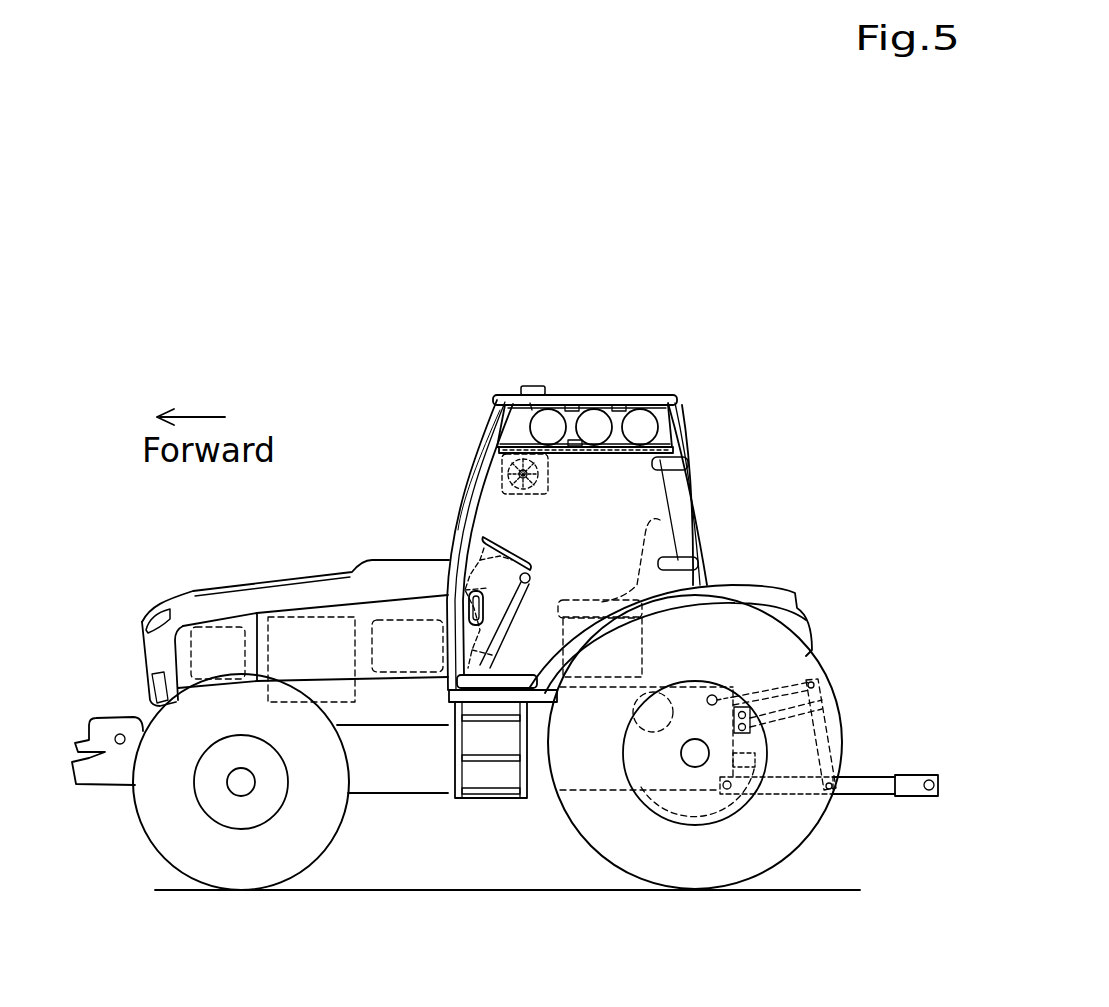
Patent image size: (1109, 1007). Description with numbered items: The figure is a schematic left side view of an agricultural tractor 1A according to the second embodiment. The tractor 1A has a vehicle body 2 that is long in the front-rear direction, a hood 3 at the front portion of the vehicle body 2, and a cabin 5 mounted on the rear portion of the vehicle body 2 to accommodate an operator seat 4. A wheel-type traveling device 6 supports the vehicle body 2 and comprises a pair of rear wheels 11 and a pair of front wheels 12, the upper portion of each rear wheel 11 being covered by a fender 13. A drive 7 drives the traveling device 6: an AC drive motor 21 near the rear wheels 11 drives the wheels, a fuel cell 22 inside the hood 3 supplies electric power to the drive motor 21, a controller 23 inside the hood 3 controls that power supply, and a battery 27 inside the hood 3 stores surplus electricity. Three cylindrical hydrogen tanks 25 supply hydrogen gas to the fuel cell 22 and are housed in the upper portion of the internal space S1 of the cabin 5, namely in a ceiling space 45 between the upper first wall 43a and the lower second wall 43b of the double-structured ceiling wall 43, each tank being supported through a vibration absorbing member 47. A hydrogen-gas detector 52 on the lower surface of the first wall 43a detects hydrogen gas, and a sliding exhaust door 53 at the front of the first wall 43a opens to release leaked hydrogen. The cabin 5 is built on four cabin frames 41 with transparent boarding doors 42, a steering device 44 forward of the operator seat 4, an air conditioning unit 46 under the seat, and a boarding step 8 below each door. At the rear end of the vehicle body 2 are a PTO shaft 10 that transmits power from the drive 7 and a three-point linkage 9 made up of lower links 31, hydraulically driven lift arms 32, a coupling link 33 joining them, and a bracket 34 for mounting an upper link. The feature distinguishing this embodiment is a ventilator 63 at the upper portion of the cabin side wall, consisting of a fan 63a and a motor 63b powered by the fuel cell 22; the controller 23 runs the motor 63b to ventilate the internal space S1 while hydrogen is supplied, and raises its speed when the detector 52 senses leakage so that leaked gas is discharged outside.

The agricultural tractor 1A is at (320, 393).
The vehicle body 2 is at (407, 768).
The hood 3 is at (223, 583).
The operator seat 4 is at (609, 568).
The cabin 5 is at (561, 488).
The traveling device 6 is at (482, 742).
The drive 7 is at (505, 544).
The boarding step 8 is at (468, 800).
The three-point linkage 9 is at (828, 714).
The PTO shaft 10 is at (755, 760).
The rear wheels 11 is at (788, 838).
The front wheels 12 is at (180, 838).
The fender 13 is at (777, 598).
The drive motor 21 is at (628, 742).
The fuel cell 22 is at (318, 618).
The controller 23 is at (390, 622).
The hydrogen tanks 25 is at (548, 410).
The battery 27 is at (222, 628).
The lower links 31 is at (829, 764).
The lift arms 32 is at (790, 680).
The coupling link 33 is at (843, 732).
The bracket 34 is at (818, 695).
The cabin frames 41 is at (483, 487).
The boarding doors 42 is at (645, 508).
The ceiling wall 43 is at (655, 396).
The first wall 43a is at (657, 395).
The second wall 43b is at (660, 447).
The steering device 44 is at (522, 565).
The ceiling space 45 is at (500, 415).
The air conditioning unit 46 is at (612, 662).
The vibration absorbing member 47 is at (530, 400).
The hydrogen-gas detector 52 is at (572, 404).
The exhaust door 53 is at (520, 392).
The ventilator 63 is at (493, 472).
The fan 63a is at (548, 465).
The motor 63b is at (548, 490).
The internal space S1 is at (592, 570).